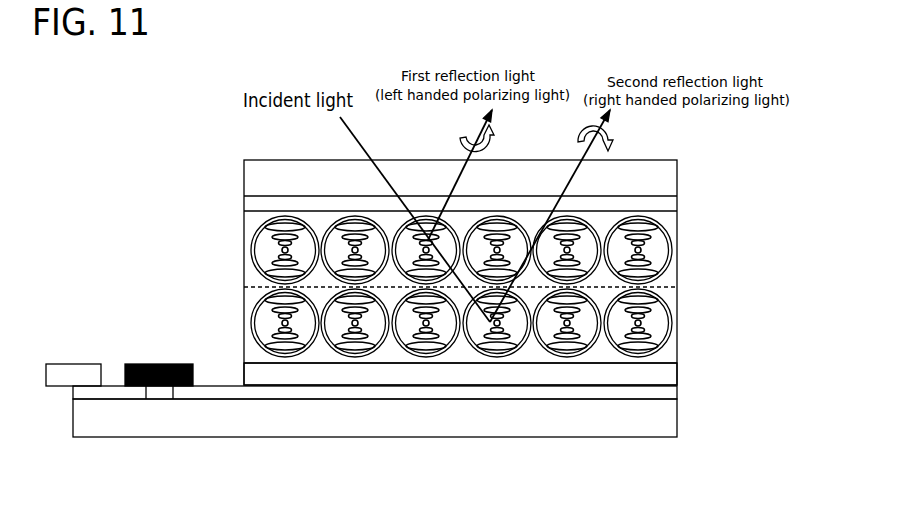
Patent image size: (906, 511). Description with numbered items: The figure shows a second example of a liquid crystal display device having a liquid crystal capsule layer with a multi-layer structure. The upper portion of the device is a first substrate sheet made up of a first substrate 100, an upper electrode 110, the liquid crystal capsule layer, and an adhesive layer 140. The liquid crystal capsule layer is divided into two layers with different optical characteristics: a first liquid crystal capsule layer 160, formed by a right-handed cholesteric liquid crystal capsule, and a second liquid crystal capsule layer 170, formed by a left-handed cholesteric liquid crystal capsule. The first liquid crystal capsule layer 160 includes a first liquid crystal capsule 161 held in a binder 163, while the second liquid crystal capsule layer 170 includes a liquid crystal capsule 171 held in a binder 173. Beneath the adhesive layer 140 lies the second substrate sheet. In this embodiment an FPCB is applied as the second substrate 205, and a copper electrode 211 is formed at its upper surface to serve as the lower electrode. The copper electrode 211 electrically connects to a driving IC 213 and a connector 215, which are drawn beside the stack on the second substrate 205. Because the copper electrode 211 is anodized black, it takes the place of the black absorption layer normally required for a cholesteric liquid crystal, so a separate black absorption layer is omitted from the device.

The first substrate 100 is at (677, 173).
The upper electrode 110 is at (677, 202).
The adhesive layer 140 is at (677, 372).
The first liquid crystal capsule layer 160 is at (237, 213).
The first liquid crystal capsule 161 is at (677, 235).
The binder 163 is at (677, 270).
The second liquid crystal capsule layer 170 is at (237, 292).
The first liquid crystal capsule 171 is at (677, 300).
The binder 173 is at (677, 340).
The second substrate 205 is at (677, 432).
The copper electrode 211 is at (677, 398).
The driving IC 213 is at (156, 364).
The connector 215 is at (75, 364).